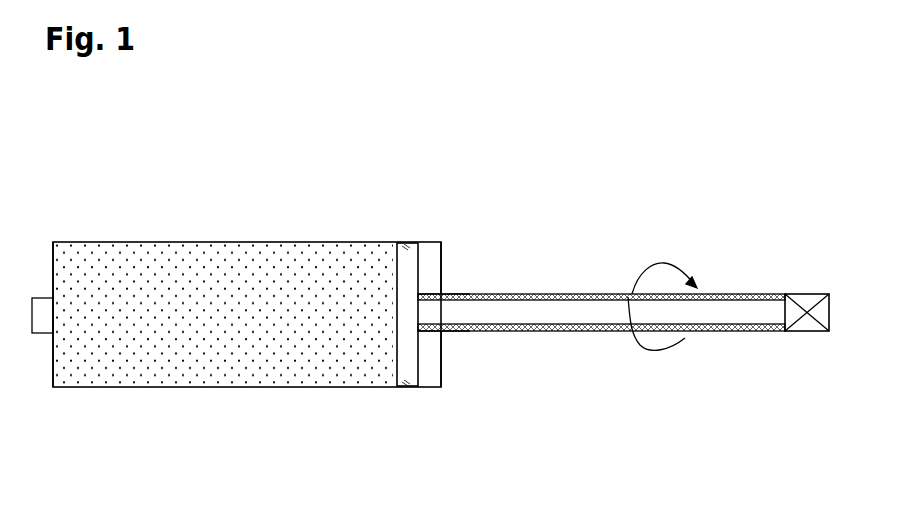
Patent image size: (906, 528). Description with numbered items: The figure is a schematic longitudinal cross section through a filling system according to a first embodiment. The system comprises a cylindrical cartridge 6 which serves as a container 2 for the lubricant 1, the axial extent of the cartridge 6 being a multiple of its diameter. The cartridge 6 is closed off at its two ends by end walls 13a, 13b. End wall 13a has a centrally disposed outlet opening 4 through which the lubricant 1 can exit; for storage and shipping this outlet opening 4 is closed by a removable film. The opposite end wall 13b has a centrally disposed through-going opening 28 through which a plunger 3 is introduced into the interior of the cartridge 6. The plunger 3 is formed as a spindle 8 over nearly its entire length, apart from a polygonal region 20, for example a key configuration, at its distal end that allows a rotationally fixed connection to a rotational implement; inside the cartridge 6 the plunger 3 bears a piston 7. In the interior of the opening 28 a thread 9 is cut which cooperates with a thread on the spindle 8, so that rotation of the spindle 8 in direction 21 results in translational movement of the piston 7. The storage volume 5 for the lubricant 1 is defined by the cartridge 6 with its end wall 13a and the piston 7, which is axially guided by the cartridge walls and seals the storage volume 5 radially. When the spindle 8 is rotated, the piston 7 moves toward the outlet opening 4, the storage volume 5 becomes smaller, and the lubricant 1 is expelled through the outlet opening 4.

The lubricant 1 is at (240, 321).
The container 2 is at (297, 208).
The plunger 3 is at (720, 352).
The outlet opening 4 is at (32, 298).
The storage volume 5 is at (322, 363).
The cylindrical cartridge 6 is at (189, 242).
The piston 7 is at (408, 364).
The spindle 8 is at (567, 307).
The thread 9 is at (447, 331).
The end wall 13a is at (53, 367).
The end wall 13b is at (442, 255).
The polygonal region 20 is at (812, 294).
The direction of rotation 21 is at (673, 263).
The through-going opening 28 is at (443, 291).